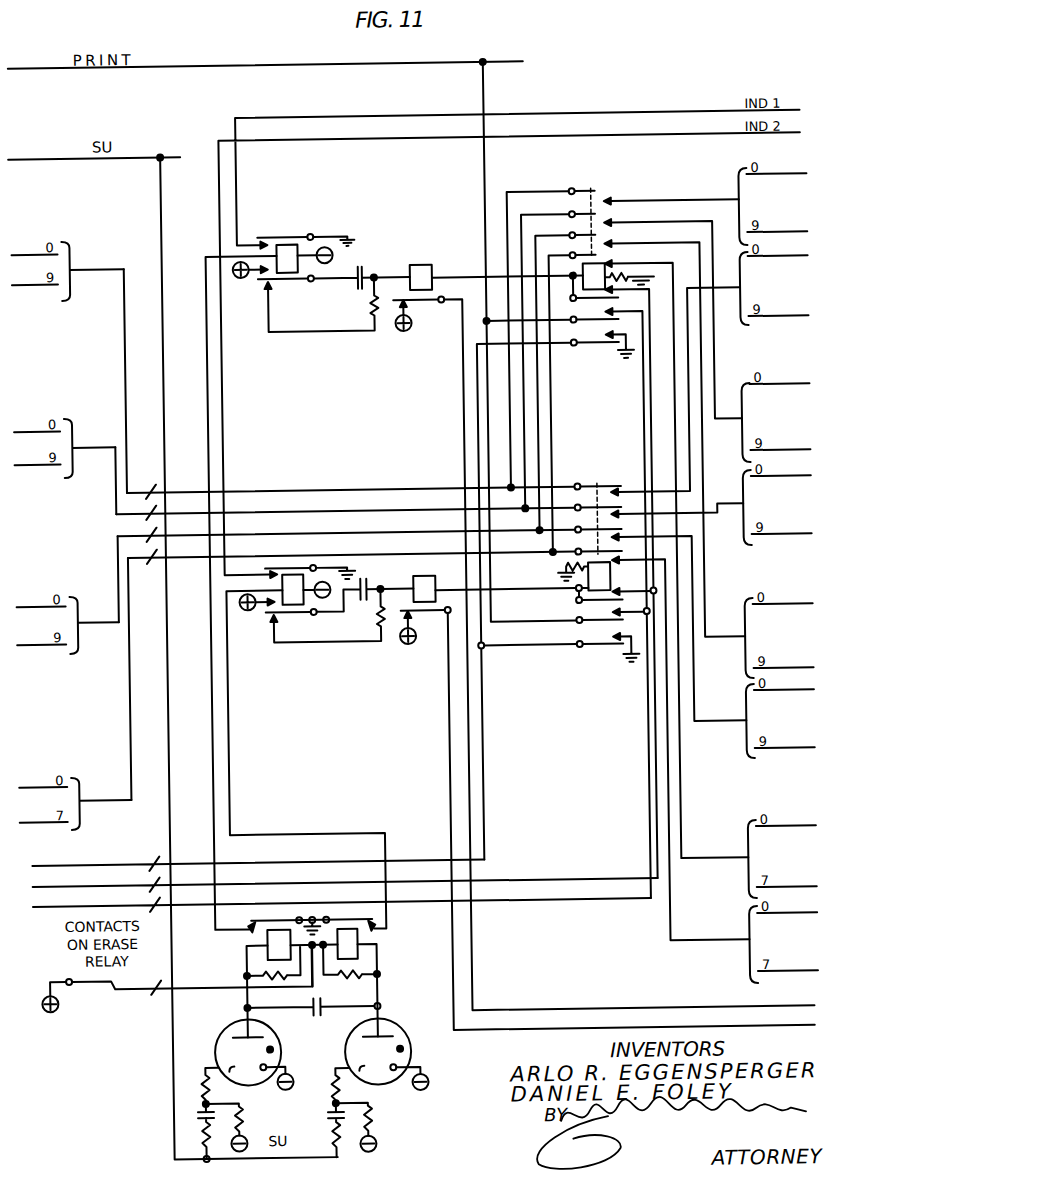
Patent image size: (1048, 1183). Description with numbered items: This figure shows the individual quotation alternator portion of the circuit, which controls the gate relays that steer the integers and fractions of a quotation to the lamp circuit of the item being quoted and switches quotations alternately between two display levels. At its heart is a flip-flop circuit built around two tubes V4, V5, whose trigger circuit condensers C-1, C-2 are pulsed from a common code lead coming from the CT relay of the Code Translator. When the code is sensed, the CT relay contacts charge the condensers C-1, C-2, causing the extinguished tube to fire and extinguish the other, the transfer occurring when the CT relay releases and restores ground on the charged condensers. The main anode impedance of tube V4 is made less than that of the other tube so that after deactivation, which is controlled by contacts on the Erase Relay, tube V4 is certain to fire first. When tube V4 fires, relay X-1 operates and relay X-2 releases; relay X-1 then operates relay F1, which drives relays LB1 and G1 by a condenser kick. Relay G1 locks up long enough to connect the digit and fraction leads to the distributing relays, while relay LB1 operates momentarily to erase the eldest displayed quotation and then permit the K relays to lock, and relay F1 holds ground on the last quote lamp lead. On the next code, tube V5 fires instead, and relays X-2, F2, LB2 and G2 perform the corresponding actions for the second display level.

The relay F-1 F1 is at (286, 259).
The relay F-2 F2 is at (292, 590).
The relay LB-1 LB1 is at (421, 277).
The relay LB-2 LB2 is at (424, 589).
The gate relay G-1 G1 is at (594, 276).
The gate relay G-2 G2 is at (599, 576).
The relay X-1 is at (278, 945).
The relay X-2 is at (347, 944).
The tube V-4 V4 is at (241, 1055).
The tube V-5 V5 is at (390, 1054).
The condenser C-1 is at (214, 1114).
The condenser C-2 is at (338, 1113).